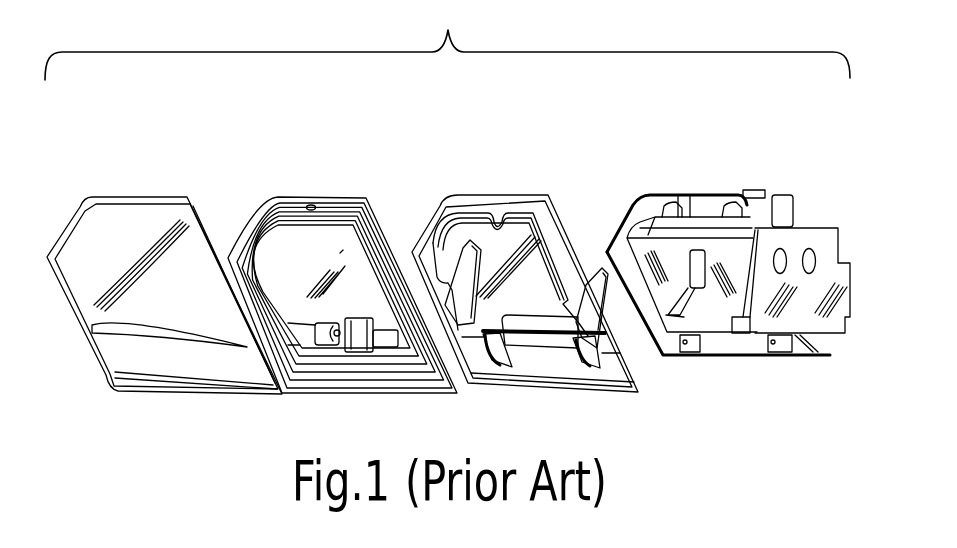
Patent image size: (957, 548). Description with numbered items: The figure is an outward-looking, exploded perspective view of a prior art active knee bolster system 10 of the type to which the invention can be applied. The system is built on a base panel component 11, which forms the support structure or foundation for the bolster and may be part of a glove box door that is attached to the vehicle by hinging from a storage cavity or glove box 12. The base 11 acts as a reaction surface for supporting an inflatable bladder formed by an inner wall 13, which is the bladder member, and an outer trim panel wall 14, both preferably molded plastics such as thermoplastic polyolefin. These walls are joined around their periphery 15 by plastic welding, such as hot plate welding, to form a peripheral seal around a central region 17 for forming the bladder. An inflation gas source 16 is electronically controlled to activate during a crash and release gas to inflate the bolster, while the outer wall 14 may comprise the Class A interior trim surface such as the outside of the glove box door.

The active knee bolster system 10 is at (447, 42).
The base panel component 11 is at (483, 193).
The glove box 12 is at (678, 190).
The inner wall 13 is at (283, 196).
The outer wall 14 is at (145, 192).
The periphery 15 is at (348, 208).
The inflation gas source 16 is at (356, 340).
The central region 17 is at (340, 253).